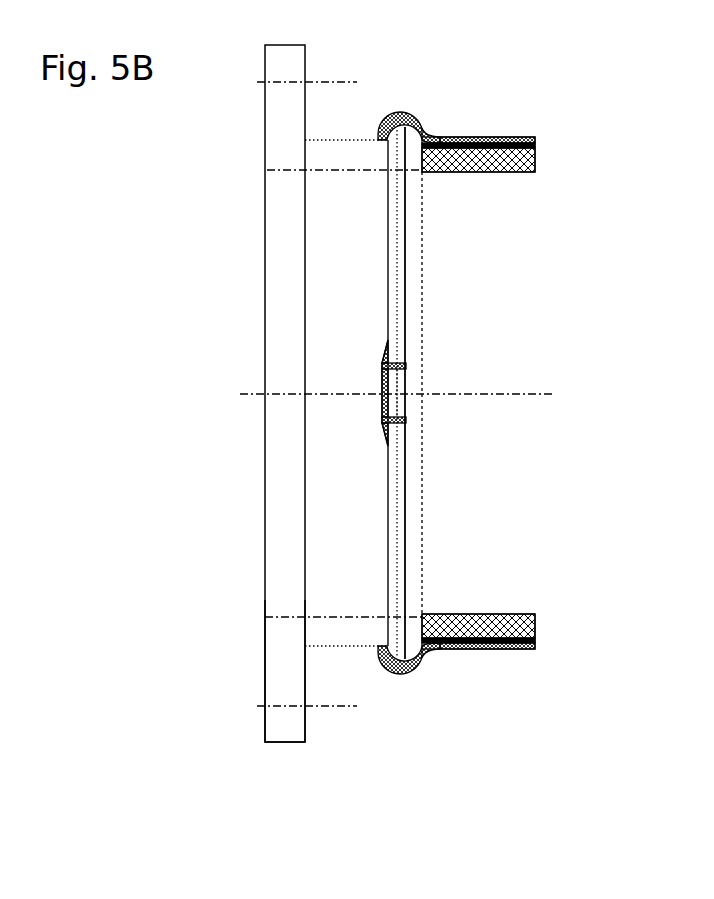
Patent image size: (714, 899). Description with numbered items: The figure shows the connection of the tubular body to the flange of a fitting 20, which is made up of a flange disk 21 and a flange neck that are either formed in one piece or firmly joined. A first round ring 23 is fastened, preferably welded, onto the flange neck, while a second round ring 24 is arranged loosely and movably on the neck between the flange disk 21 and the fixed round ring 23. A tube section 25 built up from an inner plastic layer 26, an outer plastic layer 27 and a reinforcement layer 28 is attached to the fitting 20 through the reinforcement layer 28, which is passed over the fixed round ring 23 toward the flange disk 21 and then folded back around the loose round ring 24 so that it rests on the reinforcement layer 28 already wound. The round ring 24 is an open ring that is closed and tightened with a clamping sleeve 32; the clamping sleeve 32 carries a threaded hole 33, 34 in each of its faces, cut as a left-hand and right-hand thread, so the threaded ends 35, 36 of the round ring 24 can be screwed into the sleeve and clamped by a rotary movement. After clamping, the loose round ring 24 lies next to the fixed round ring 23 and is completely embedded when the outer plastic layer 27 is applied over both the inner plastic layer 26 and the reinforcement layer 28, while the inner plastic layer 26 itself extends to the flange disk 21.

The fitting 20 is at (277, 109).
The flange disk 21 is at (277, 663).
The round ring 23 is at (415, 128).
The round ring 24 is at (394, 115).
The tube section 25 is at (515, 159).
The inner plastic layer 26 is at (473, 160).
The outer plastic layer 27 is at (477, 137).
The reinforcement layer 28 is at (503, 143).
The clamping sleeve 32 is at (397, 402).
The threaded hole 33 is at (388, 377).
The threaded hole 34 is at (385, 415).
The threaded end 35 is at (405, 362).
The threaded end 36 is at (390, 423).